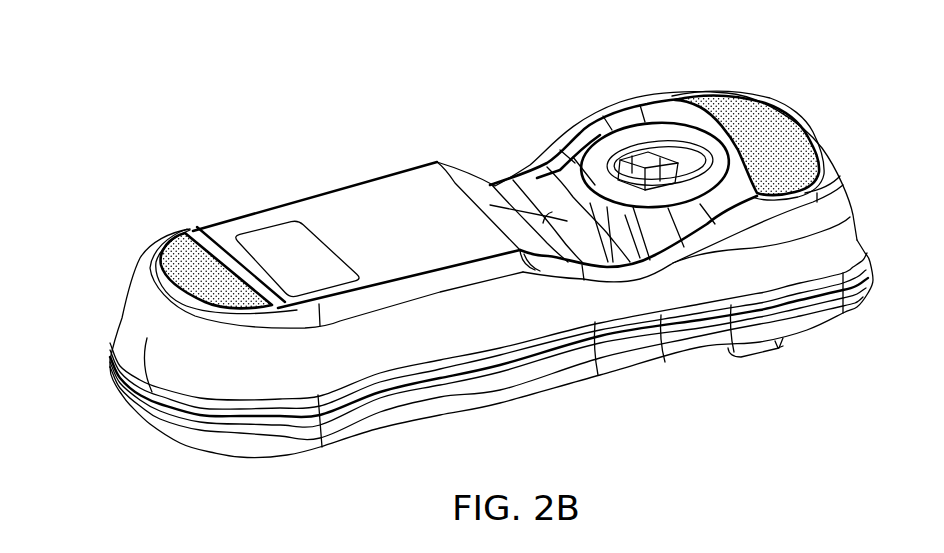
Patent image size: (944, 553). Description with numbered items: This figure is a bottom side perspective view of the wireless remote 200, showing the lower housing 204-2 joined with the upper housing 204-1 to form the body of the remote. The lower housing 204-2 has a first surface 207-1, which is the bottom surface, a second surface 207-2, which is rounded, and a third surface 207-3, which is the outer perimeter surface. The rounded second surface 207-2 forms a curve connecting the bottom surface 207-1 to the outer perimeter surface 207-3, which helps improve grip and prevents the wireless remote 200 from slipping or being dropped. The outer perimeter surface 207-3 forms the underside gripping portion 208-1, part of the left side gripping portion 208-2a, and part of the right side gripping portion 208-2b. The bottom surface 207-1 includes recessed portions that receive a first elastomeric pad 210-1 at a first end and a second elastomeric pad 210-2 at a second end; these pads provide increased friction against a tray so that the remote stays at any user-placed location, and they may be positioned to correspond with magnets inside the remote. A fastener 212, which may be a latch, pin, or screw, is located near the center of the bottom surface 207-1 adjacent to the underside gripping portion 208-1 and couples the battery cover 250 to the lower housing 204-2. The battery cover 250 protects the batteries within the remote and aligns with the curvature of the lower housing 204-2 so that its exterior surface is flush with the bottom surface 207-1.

The wireless remote 200 is at (195, 97).
The upper housing 204-1 is at (230, 440).
The lower housing 204-2 is at (143, 314).
The first surface 207-1 is at (620, 117).
The second surface 207-2 is at (152, 258).
The third surface 207-3 is at (145, 347).
The underside gripping portion 208-1 is at (655, 236).
The left side gripping portion 208-2a is at (629, 393).
The right side gripping portion 208-2b is at (509, 156).
The first elastomeric pad 210-1 is at (767, 118).
The second elastomeric pad 210-2 is at (185, 242).
The fastener 212 is at (673, 160).
The battery cover 250 is at (383, 207).